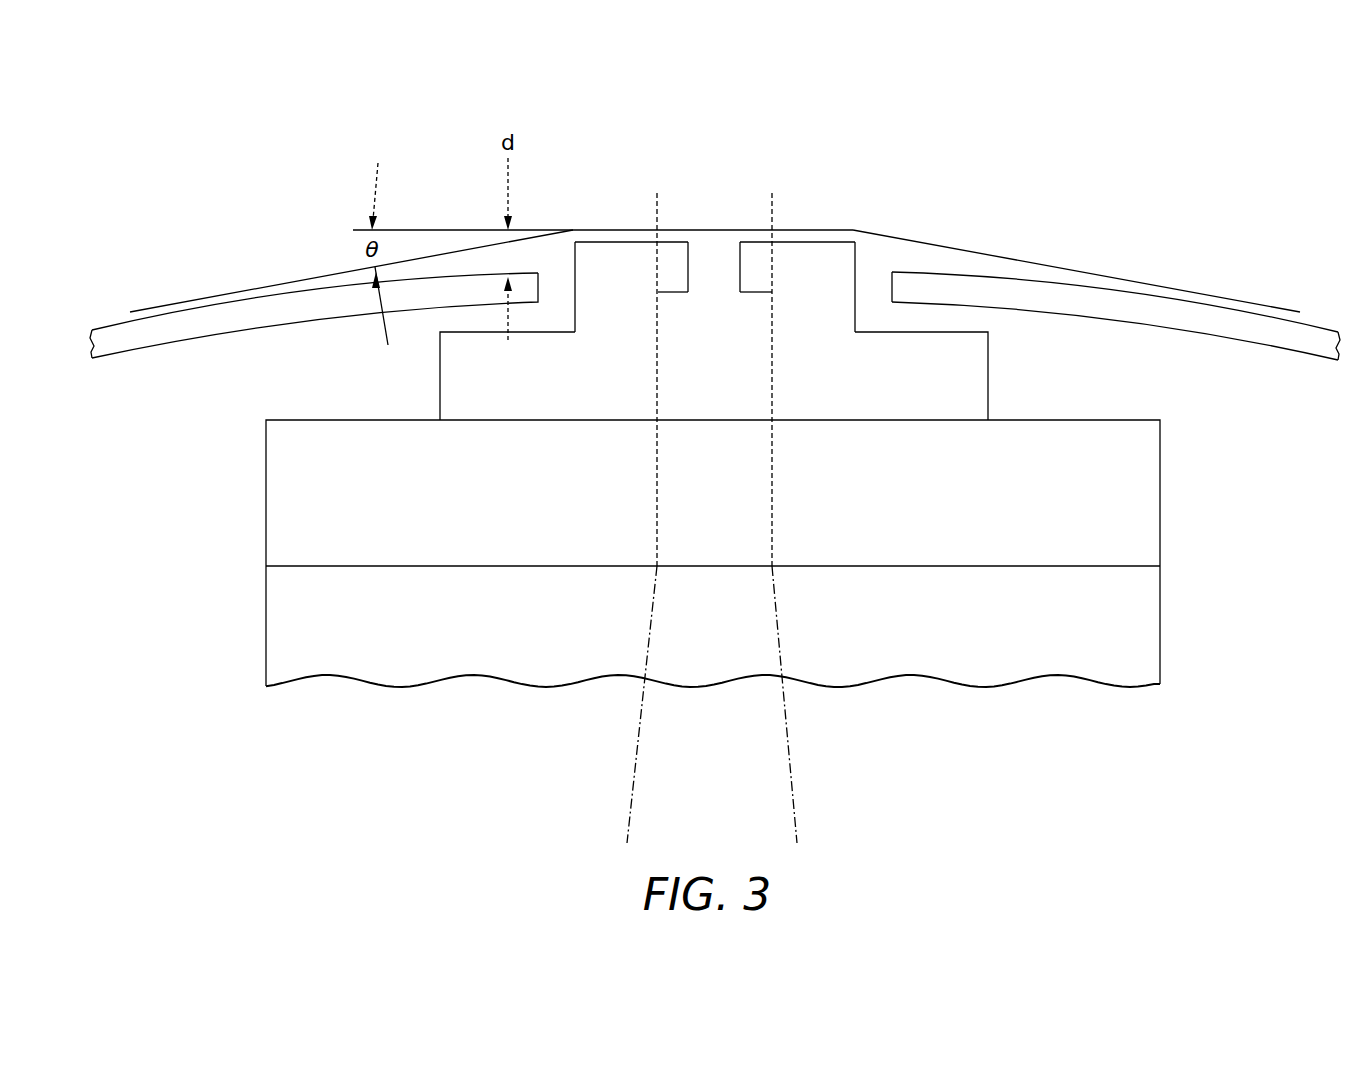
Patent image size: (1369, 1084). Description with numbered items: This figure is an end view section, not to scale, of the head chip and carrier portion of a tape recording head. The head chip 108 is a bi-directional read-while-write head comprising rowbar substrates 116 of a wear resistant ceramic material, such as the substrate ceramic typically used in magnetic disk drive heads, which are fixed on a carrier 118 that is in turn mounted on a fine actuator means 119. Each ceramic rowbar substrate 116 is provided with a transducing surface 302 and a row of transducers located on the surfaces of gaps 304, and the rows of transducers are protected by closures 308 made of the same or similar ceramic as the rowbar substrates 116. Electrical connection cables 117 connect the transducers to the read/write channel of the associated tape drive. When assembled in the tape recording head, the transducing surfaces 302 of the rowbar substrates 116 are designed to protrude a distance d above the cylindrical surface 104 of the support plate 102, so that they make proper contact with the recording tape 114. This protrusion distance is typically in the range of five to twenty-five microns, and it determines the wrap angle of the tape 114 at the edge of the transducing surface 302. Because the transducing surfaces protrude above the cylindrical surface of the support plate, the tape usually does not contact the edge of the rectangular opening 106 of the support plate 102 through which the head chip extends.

The support plate 102 is at (170, 350).
The cylindrical surface 104 is at (224, 304).
The rectangular opening 106 is at (890, 285).
The head chip 108 is at (440, 386).
The recording tape 114 is at (1092, 272).
The rowbar substrate 116 is at (573, 256).
The electrical connection cable 117 is at (628, 822).
The carrier 118 is at (1162, 518).
The fine actuator means 119 is at (1162, 630).
The transducing surface 302 is at (596, 241).
The gap 304 is at (716, 364).
The closure 308 is at (683, 240).